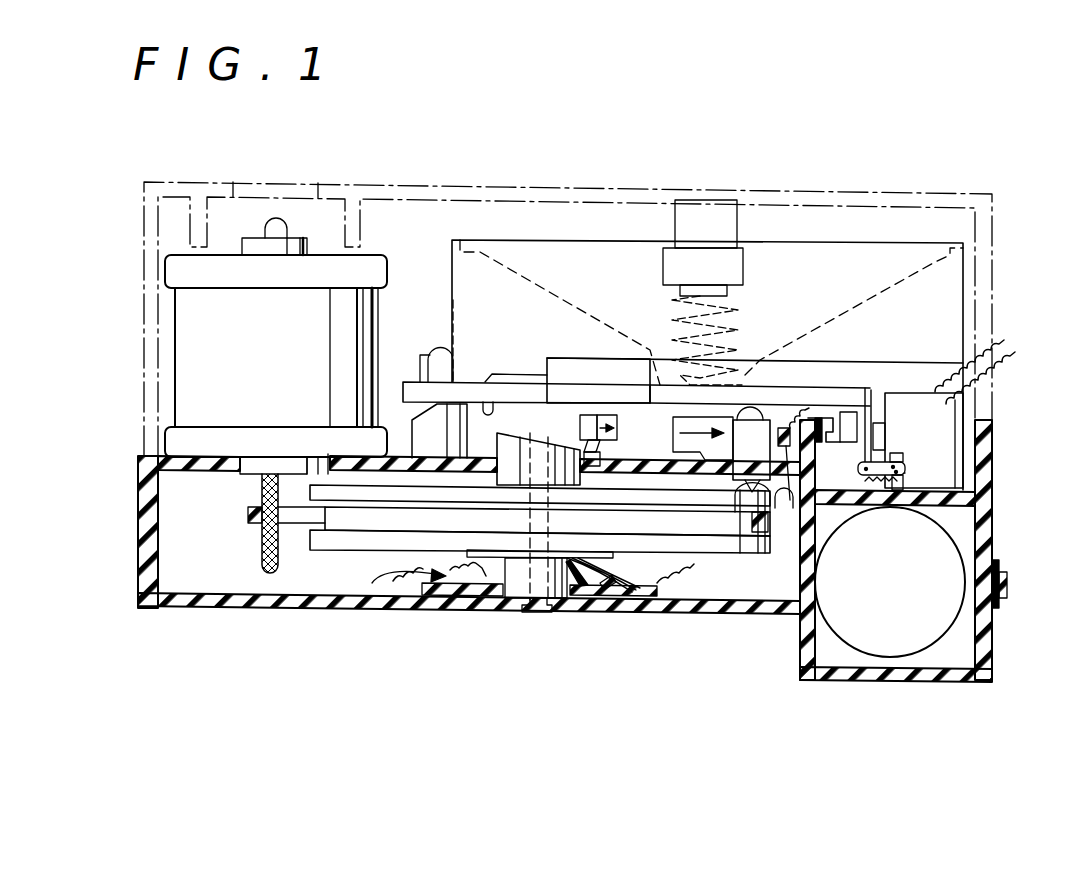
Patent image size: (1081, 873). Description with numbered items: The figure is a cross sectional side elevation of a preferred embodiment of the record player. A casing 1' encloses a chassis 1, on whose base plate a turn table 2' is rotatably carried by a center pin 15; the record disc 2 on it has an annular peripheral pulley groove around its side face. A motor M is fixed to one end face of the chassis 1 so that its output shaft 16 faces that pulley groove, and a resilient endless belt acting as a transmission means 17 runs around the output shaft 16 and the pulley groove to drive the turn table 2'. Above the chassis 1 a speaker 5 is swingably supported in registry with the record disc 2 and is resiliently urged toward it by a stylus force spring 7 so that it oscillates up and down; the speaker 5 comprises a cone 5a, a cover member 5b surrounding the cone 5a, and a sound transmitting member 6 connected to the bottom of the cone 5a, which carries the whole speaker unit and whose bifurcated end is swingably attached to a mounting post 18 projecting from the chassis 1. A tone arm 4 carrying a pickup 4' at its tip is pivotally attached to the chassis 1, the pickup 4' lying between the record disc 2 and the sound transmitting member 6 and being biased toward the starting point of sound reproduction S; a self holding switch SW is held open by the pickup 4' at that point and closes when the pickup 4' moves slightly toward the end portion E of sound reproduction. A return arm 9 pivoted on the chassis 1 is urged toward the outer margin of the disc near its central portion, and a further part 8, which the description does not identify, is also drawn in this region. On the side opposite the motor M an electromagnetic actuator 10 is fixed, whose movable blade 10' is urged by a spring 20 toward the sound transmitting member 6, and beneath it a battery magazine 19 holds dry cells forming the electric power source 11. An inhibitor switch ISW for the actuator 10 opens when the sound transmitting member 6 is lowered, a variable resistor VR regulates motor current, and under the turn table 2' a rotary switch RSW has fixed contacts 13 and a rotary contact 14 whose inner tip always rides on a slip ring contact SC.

The chassis 1 is at (525, 569).
The casing 1' is at (527, 319).
The record disc 2 is at (540, 441).
The turn table 2' is at (284, 576).
The tone arm 4 is at (640, 282).
The pickup 4' is at (796, 298).
The speaker 5 is at (774, 232).
The speaker diaphragm 5a is at (548, 330).
The cover member 5b is at (452, 300).
The sound transmitting member 6 is at (485, 402).
The stylus force spring 7 is at (703, 292).
The support column 8 is at (528, 433).
The return arm 9 is at (587, 415).
The electromagnetic actuator 10 is at (979, 431).
The movable blade 10' is at (945, 254).
The electric power source 11 is at (870, 650).
The fixed contacts 13 is at (458, 588).
The rotary contact 14 is at (605, 600).
The center pin 15 is at (520, 590).
The output shaft 16 is at (260, 550).
The transmission means 17 is at (248, 513).
The mounting post 18 is at (440, 355).
The battery magazine 19 is at (952, 650).
The spring 20 is at (960, 490).
The motor M is at (313, 297).
The end portion of sound reproduction E is at (603, 490).
The starting point of sound reproduction S is at (765, 500).
The self holding switch SW is at (783, 450).
The slip ring contact SC is at (590, 600).
The rotary switch RSW is at (395, 572).
The inhibitor switch ISW is at (822, 418).
The variable resistor VR is at (1006, 576).